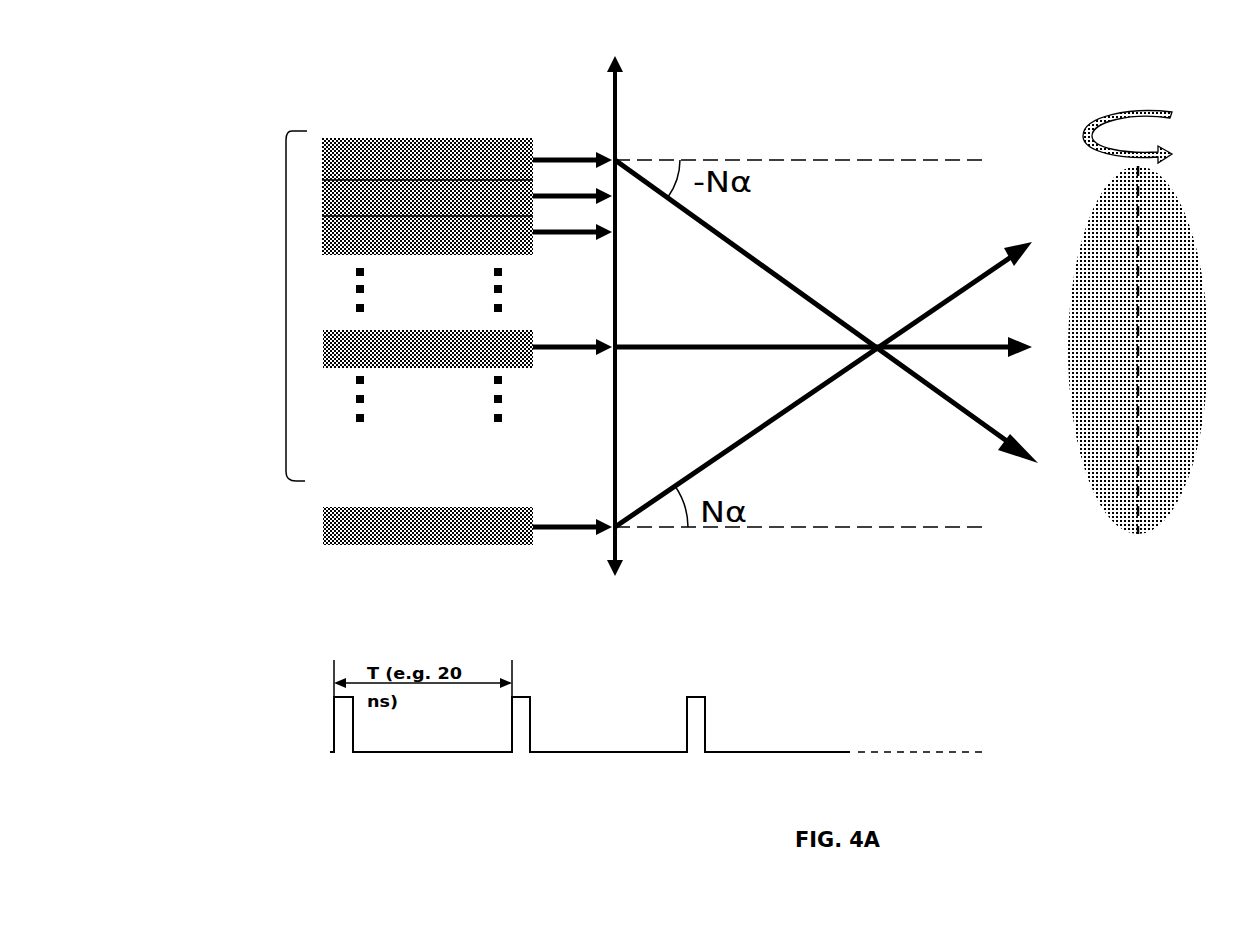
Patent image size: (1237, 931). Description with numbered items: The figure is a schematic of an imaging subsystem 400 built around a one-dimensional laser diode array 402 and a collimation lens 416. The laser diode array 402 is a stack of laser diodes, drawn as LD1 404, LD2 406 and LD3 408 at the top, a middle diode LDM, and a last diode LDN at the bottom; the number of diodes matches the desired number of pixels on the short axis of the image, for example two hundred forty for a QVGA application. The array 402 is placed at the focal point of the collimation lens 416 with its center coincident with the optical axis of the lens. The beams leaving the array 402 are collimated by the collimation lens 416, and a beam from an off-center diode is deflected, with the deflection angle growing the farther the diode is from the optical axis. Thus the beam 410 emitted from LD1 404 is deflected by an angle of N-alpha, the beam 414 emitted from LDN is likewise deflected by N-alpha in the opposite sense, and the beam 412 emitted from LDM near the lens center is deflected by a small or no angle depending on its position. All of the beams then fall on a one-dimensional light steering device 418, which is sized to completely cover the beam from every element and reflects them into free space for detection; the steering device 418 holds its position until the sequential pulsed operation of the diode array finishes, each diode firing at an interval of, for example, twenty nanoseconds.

The imaging subsystem 400 is at (291, 86).
The 1D laser diode array 402 is at (286, 300).
The laser diode LD1 404 is at (467, 159).
The laser diode LD2 406 is at (467, 198).
The laser diode LD3 408 is at (467, 235).
The beam 410 is at (826, 311).
The beam 412 is at (823, 365).
The beam 414 is at (823, 371).
The collimation lens 416 is at (635, 330).
The 1D light steering device 418 is at (1139, 339).